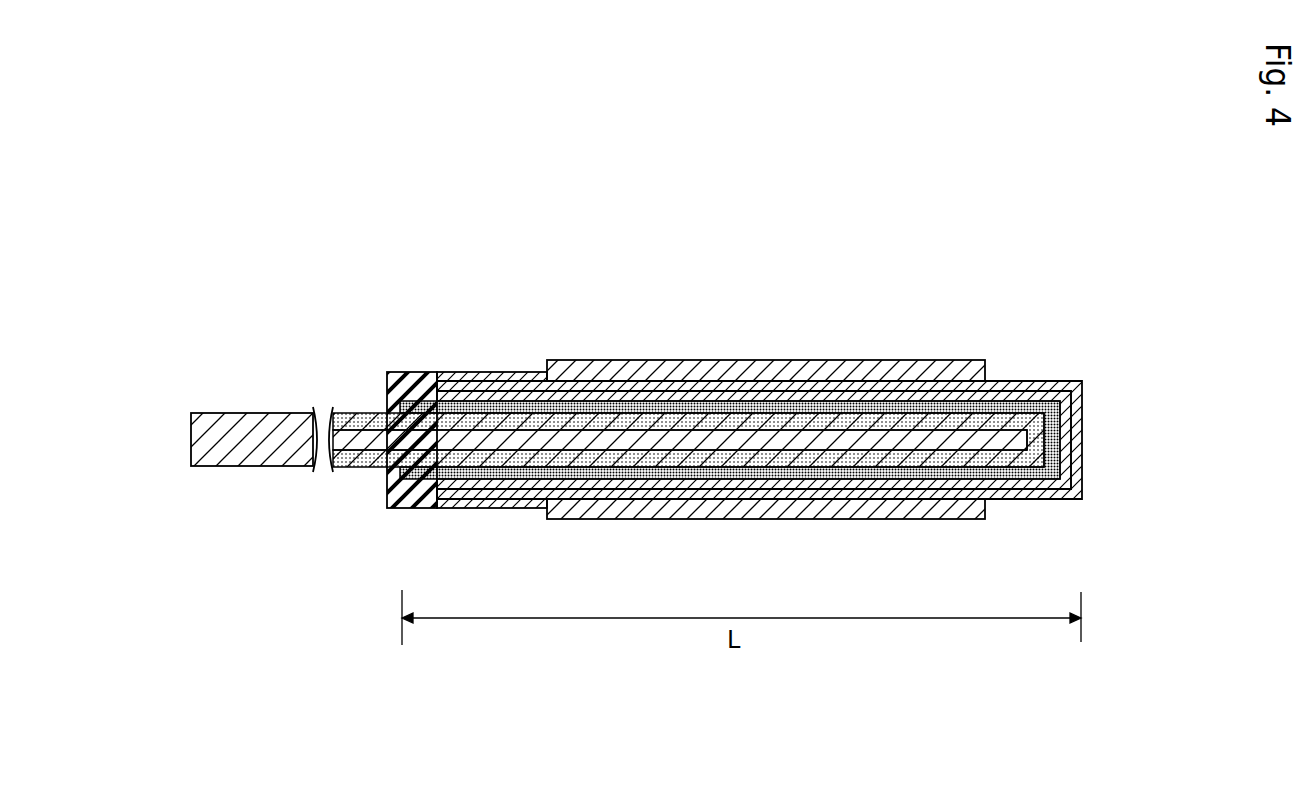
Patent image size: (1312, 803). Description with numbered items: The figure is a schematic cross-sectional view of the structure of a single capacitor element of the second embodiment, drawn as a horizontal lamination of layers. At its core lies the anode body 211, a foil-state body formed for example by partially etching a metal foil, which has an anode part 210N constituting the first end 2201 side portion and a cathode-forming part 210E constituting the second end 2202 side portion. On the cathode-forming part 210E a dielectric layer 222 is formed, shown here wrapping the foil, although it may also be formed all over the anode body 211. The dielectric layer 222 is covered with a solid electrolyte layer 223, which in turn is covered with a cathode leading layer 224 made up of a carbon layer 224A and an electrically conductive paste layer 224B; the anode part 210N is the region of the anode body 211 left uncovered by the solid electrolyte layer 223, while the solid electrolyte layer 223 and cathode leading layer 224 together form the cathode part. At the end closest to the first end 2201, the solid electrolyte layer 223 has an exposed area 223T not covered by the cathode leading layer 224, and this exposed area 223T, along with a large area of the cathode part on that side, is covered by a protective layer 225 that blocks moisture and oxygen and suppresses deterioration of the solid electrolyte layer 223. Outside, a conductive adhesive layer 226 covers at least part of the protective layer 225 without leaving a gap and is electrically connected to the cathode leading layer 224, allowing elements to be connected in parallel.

The first end 2201 is at (225, 440).
The second end 2202 is at (761, 400).
The anode body 211 is at (191, 447).
The anode part 210N is at (225, 480).
The cathode-forming part 210E is at (830, 442).
The dielectric layer 222 is at (348, 467).
The solid electrolyte layer 223 is at (1050, 390).
The exposed area 223T is at (410, 508).
The cathode leading layer 224 is at (735, 354).
The carbon layer 224A is at (598, 265).
The electrically conductive paste layer 224B is at (650, 385).
The protective layer 225 is at (419, 378).
The conductive adhesive layer 226 is at (752, 362).